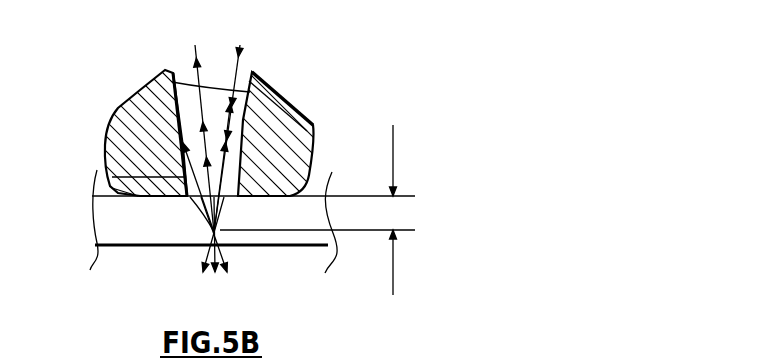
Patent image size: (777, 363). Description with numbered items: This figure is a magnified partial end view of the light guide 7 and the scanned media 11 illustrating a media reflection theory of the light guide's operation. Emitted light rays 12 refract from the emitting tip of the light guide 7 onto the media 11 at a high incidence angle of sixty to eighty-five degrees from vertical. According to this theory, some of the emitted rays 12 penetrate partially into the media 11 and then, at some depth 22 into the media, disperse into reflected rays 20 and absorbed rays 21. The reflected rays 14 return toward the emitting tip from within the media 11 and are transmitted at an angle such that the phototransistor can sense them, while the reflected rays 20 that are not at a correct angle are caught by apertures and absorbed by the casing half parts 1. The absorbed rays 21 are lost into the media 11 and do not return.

The casing half parts 1 is at (123, 112).
The light guide 7 is at (188, 82).
The scanned media 11 is at (147, 247).
The light rays 12 is at (240, 76).
The reflected rays 14 is at (197, 73).
The reflected rays 20 is at (112, 172).
The absorbed rays 21 is at (212, 278).
The depth 22 is at (393, 150).